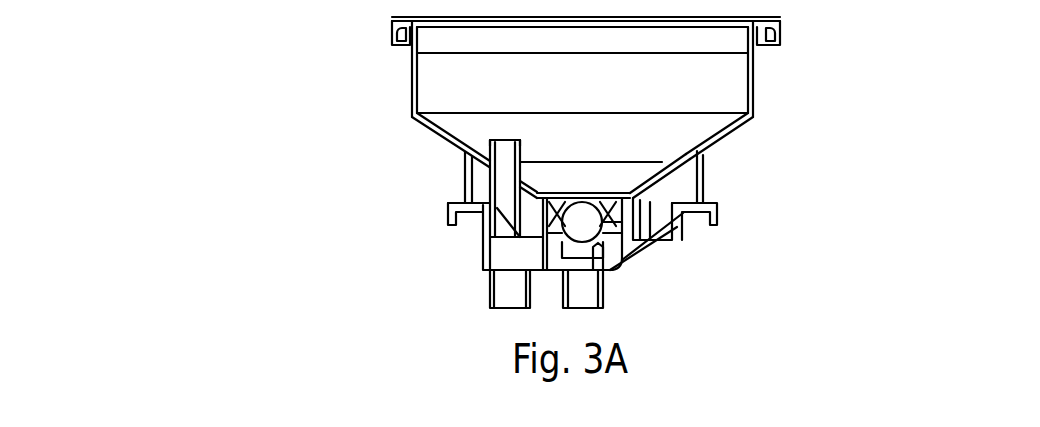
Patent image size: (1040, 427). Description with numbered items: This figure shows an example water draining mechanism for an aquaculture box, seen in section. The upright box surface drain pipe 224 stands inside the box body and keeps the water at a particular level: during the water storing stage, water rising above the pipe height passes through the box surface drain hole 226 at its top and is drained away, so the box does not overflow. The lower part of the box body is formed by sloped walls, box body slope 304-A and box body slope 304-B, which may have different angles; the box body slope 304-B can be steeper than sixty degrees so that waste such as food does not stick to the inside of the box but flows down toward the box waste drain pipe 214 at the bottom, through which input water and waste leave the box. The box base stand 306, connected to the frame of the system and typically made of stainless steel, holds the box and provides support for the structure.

The box surface drain hole 226 is at (507, 139).
The box base stand 306 is at (453, 206).
The box surface drain pipe 224 is at (508, 286).
The box slope 304-A is at (730, 133).
The box slope 304-B is at (663, 178).
The box waste drain pipe 214 is at (587, 293).